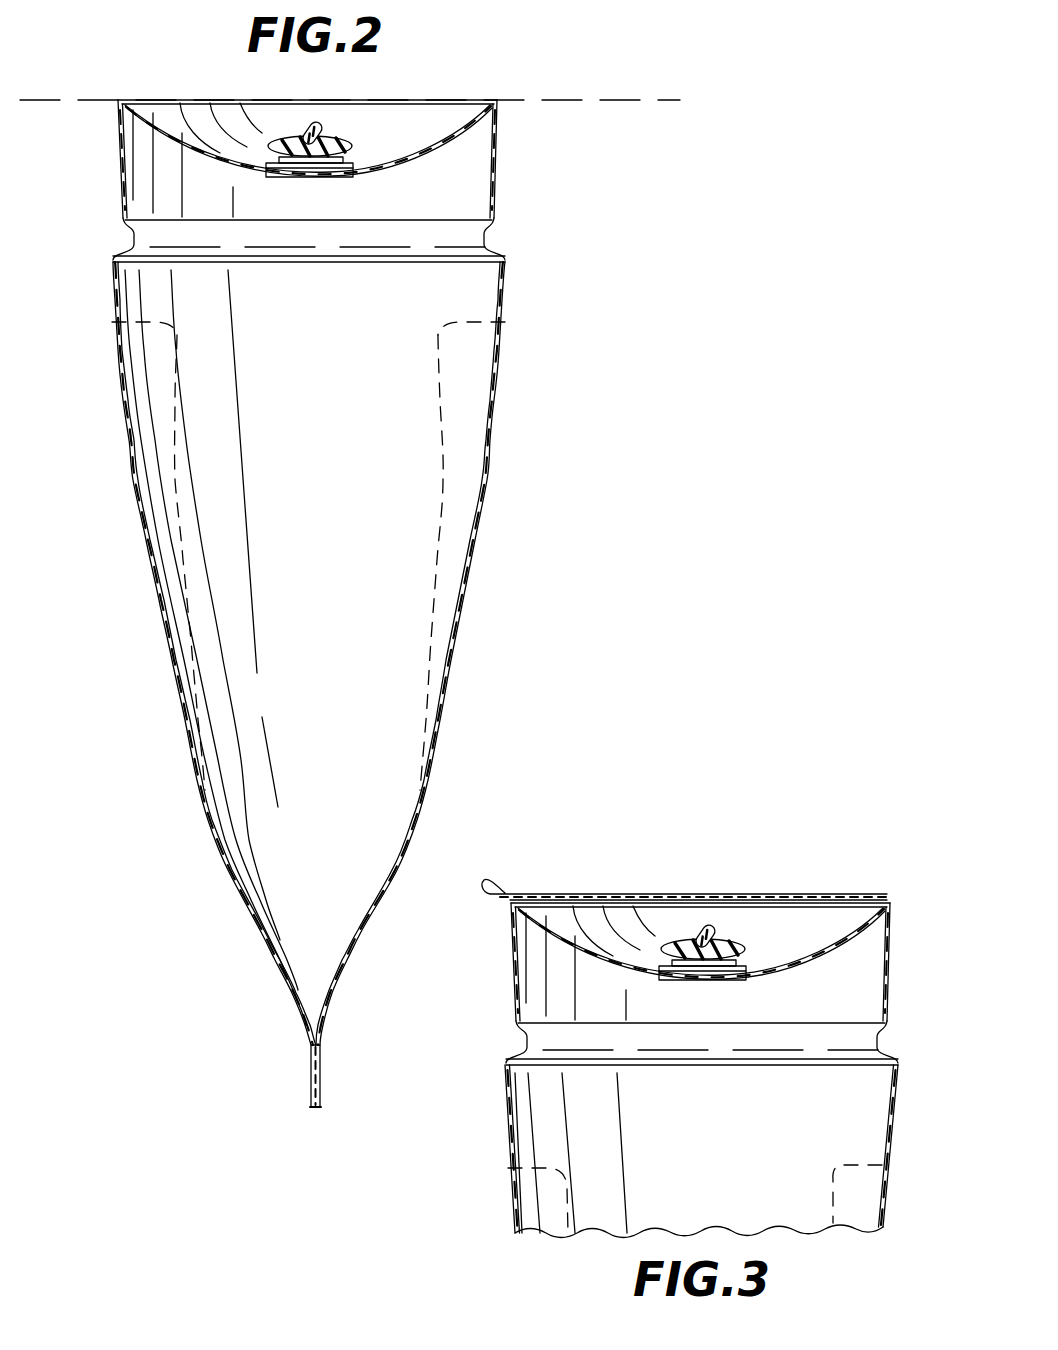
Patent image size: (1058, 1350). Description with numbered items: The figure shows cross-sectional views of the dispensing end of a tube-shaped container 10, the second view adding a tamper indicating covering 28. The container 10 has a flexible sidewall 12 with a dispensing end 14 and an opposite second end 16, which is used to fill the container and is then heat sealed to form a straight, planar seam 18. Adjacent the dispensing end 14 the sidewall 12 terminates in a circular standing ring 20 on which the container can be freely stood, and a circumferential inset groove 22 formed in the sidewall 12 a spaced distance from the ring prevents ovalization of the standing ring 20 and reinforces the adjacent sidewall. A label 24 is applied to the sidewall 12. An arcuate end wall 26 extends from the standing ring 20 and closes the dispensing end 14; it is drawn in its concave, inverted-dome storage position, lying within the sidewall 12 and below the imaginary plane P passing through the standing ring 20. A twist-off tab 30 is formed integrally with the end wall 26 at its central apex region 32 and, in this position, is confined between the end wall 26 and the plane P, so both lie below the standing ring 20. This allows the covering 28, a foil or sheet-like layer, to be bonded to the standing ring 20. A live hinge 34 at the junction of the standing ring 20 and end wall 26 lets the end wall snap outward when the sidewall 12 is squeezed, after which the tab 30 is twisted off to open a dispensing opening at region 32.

In FIG. 2, the tube-shaped container 10 is at (482, 528).
In FIG. 3, the tube-shaped container 10 is at (504, 1147).
In FIG. 2, the flexible sidewall 12 is at (498, 378).
In FIG. 3, the flexible sidewall 12 is at (503, 1092).
In FIG. 2, the dispensing end 14 is at (407, 100).
In FIG. 3, the dispensing end 14 is at (552, 896).
In FIG. 2, the second end 16 is at (320, 1107).
In FIG. 2, the planar seam 18 is at (311, 1079).
In FIG. 2, the standing ring 20 is at (125, 100).
In FIG. 3, the standing ring 20 is at (893, 902).
In FIG. 2, the circumferential inset groove 22 is at (483, 237).
In FIG. 3, the circumferential inset groove 22 is at (528, 1050).
In FIG. 2, the label 24 is at (116, 358).
In FIG. 3, the label 24 is at (514, 1212).
In FIG. 2, the arcuate end wall 26 is at (428, 150).
In FIG. 3, the arcuate end wall 26 is at (763, 968).
In FIG. 3, the tamper indicating covering 28 is at (713, 895).
In FIG. 2, the twist-off tab 30 is at (282, 133).
In FIG. 3, the twist-off tab 30 is at (687, 923).
In FIG. 2, the central apex region 32 is at (311, 177).
In FIG. 3, the central apex region 32 is at (703, 980).
In FIG. 2, the live hinge 34 is at (484, 102).
In FIG. 3, the live hinge 34 is at (848, 897).
In FIG. 2, the imaginary plane P is at (576, 100).